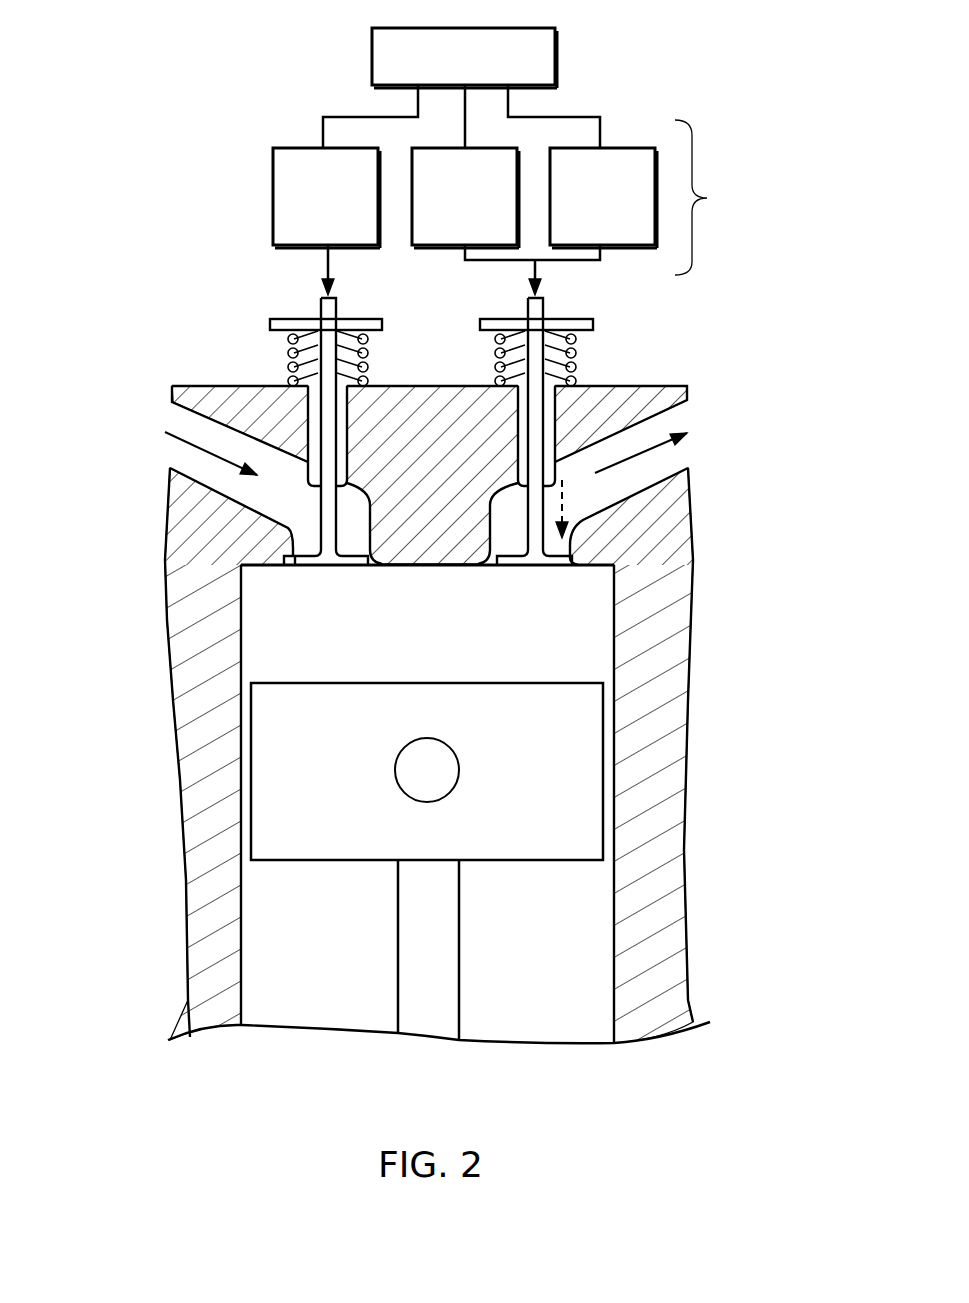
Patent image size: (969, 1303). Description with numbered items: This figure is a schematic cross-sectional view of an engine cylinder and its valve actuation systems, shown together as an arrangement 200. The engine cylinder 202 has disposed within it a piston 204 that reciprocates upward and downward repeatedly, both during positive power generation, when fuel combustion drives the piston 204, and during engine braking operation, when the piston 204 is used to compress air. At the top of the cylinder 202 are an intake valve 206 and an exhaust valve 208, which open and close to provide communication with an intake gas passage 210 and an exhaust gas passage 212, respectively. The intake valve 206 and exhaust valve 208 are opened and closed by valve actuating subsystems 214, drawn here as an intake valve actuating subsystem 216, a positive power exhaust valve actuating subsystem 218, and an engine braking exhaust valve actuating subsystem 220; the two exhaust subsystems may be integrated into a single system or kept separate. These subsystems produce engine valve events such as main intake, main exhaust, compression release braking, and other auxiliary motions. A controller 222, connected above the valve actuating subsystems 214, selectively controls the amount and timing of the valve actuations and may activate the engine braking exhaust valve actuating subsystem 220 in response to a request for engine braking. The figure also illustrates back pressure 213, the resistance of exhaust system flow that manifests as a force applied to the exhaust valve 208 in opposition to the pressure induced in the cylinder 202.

The engine system 200 is at (150, 182).
The engine cylinder 202 is at (300, 993).
The piston 204 is at (427, 681).
The intake valve 206 is at (337, 568).
The exhaust valve 208 is at (519, 568).
The intake gas passage 210 is at (183, 449).
The exhaust gas passage 212 is at (667, 448).
The back pressure 213 is at (562, 497).
The valve actuating subsystems 214 is at (516, 197).
The intake valve actuating subsystem 216 is at (326, 198).
The positive power exhaust valve actuating subsystem 218 is at (465, 198).
The engine braking exhaust valve actuating subsystem 220 is at (603, 198).
The controller 222 is at (464, 58).